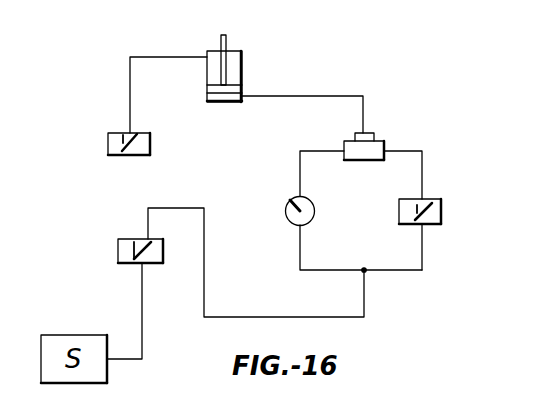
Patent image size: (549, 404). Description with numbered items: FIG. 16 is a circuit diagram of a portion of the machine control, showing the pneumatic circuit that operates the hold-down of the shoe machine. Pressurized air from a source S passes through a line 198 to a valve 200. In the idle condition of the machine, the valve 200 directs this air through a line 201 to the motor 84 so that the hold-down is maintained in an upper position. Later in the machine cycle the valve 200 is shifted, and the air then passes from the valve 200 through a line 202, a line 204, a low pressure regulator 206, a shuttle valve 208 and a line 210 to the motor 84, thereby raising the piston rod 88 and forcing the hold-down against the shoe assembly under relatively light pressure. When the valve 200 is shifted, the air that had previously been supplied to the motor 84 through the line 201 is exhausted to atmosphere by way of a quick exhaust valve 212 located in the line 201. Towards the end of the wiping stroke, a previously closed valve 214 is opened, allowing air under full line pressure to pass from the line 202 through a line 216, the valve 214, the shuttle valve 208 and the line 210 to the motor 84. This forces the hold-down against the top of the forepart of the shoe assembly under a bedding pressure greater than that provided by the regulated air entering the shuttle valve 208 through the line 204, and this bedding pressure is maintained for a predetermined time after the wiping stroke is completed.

The motor 84 is at (233, 70).
The piston rod 88 is at (229, 38).
The line 198 is at (141, 313).
The valve 200 is at (118, 251).
The line 201 is at (130, 77).
The line 202 is at (205, 273).
The line 204 is at (301, 238).
The low pressure regulator 206 is at (297, 200).
The shuttle valve 208 is at (372, 135).
The line 210 is at (268, 97).
The quick exhaust valve 212 is at (108, 141).
The valve 214 is at (441, 216).
The line 216 is at (424, 257).